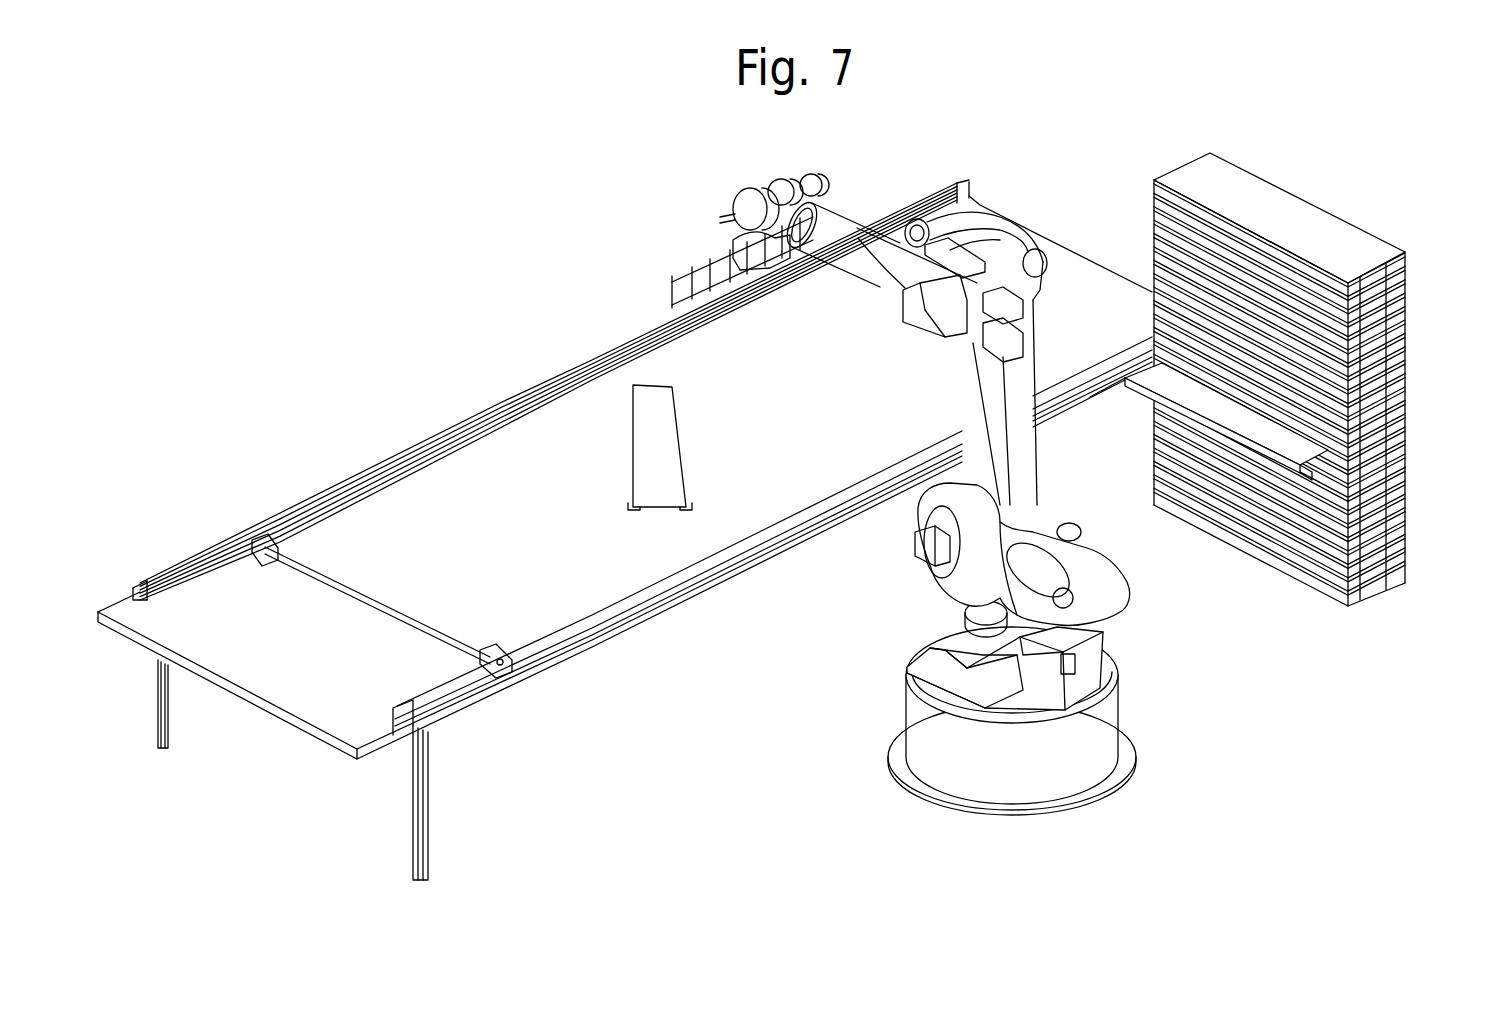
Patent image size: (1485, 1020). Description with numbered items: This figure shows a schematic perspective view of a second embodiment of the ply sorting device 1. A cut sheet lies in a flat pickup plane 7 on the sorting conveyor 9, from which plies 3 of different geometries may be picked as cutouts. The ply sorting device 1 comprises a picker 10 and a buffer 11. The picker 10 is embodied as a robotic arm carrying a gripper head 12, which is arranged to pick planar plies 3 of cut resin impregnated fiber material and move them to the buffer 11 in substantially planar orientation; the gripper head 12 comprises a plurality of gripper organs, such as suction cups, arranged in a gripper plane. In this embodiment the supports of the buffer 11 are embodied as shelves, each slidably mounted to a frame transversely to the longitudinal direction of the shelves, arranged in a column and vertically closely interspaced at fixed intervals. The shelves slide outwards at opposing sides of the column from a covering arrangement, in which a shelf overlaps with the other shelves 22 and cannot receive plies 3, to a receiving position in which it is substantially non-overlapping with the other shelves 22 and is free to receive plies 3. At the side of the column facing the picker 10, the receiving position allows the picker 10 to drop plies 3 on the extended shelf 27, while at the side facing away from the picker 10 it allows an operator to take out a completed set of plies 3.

The ply sorting device 1 is at (625, 530).
The ply 3 is at (658, 425).
The pickup plane 7 is at (370, 541).
The sorting conveyor 9 is at (506, 533).
The picker 10 is at (952, 743).
The buffer 11 is at (1405, 532).
The gripper head 12 is at (700, 267).
The other shelves 22 is at (1403, 333).
The shelf 27 is at (1312, 477).